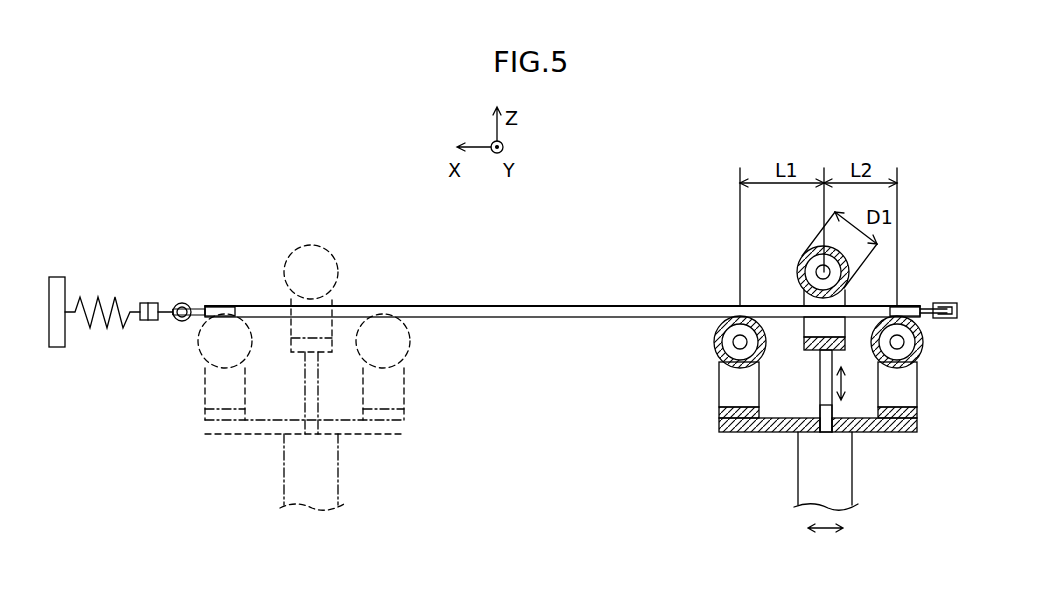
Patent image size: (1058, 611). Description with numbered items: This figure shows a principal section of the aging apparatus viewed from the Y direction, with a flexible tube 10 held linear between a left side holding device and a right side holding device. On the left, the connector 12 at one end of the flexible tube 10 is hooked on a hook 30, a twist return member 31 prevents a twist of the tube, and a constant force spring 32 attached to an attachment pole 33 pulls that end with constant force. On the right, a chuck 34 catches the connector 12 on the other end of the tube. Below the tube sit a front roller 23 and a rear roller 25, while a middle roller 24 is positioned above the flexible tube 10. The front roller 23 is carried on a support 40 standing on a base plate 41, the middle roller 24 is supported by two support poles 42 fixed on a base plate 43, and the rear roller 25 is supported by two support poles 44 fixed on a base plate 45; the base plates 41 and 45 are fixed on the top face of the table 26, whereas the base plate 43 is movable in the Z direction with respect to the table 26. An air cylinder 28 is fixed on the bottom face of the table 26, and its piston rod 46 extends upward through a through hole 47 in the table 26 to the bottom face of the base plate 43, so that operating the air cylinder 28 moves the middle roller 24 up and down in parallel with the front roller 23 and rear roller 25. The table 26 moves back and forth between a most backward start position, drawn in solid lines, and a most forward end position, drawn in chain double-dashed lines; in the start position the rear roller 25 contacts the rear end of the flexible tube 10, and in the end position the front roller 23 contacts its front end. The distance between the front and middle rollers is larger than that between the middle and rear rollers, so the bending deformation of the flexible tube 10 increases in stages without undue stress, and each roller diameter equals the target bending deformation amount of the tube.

The flexible tube 10 is at (546, 306).
The connector 12 is at (203, 306).
The front roller 23 is at (198, 350).
The middle roller 24 is at (314, 245).
The rear roller 25 is at (411, 344).
The table 26 is at (380, 434).
The air cylinder 28 is at (798, 466).
The hook 30 is at (182, 303).
The twist return member 31 is at (146, 303).
The constant force spring 32 is at (98, 300).
The attachment pole 33 is at (58, 277).
The chuck 34 is at (948, 303).
The roller holder 40 is at (719, 388).
The base plate 41 is at (719, 412).
The support pole 42 is at (804, 326).
The base plate 43 is at (804, 346).
The support pole 44 is at (917, 385).
The base plate 45 is at (917, 412).
The piston rod 46 is at (820, 370).
The through hole 47 is at (825, 418).